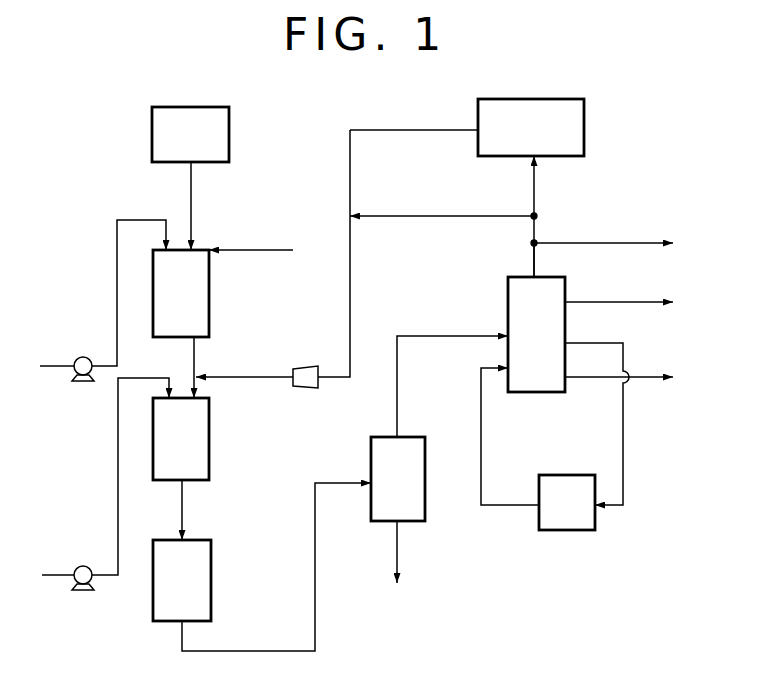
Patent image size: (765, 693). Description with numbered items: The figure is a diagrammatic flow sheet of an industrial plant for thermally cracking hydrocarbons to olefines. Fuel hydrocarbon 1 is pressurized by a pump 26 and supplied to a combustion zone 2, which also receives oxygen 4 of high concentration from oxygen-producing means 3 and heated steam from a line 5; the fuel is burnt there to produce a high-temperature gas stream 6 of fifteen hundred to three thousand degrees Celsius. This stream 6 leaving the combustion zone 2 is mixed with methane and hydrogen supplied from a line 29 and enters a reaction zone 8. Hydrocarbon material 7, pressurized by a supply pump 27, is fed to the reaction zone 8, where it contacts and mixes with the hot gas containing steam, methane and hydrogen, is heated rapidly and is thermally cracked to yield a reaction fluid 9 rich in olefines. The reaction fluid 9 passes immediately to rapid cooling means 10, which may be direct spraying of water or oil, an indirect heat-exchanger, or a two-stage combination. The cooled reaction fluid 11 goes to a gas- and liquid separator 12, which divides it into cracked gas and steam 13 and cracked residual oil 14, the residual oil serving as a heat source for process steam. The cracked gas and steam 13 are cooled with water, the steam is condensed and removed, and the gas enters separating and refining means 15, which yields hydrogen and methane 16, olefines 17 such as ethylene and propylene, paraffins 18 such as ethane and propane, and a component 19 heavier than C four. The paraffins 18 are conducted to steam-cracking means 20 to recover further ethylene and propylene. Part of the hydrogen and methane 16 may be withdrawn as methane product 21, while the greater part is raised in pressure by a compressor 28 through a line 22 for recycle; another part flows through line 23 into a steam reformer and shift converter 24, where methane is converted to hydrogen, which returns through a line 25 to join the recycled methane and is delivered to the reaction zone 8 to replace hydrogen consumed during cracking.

The fuel hydrocarbon 1 is at (58, 366).
The combustion zone 2 is at (153, 300).
The oxygen-producing means 3 is at (229, 135).
The oxygen 4 is at (191, 205).
The line 5 is at (283, 248).
The high-temperature gas stream 6 is at (194, 355).
The hydrocarbon material 7 is at (58, 575).
The reaction zone 8 is at (209, 445).
The reaction fluid 9 is at (182, 507).
The rapid cooling means 10 is at (211, 580).
The reaction fluid after cooling 11 is at (340, 483).
The gas- and liquid separator 12 is at (425, 468).
The cracked gas and steam 13 is at (398, 395).
The cracked residual oil 14 is at (393, 562).
The separating and refining means 15 is at (508, 305).
The hydrogen and methane 16 is at (534, 258).
The olefines 17 is at (650, 303).
The paraffins 18 is at (623, 443).
The component heavier than C4 19 is at (653, 378).
The steam-cracking means 20 is at (570, 475).
The methane product 21 is at (650, 245).
The line 22 is at (415, 215).
The line 23 is at (534, 188).
The steam reformer and shift converter 24 is at (567, 99).
The line 25 is at (422, 128).
The pump 26 is at (83, 381).
The supply pump 27 is at (85, 592).
The compressor 28 is at (307, 368).
The line 29 is at (267, 375).